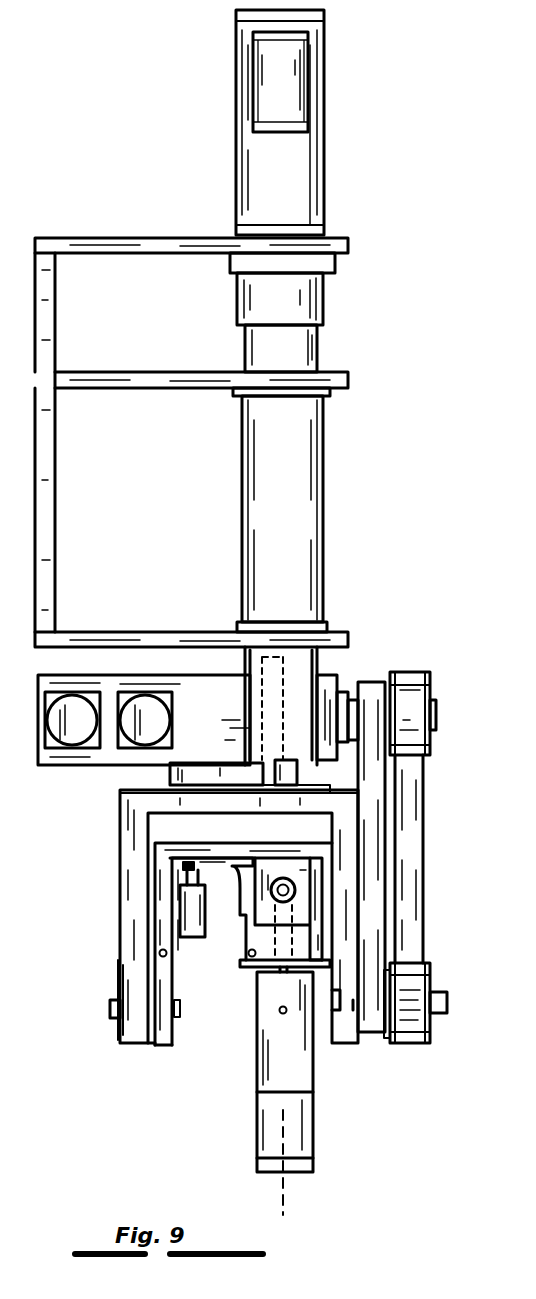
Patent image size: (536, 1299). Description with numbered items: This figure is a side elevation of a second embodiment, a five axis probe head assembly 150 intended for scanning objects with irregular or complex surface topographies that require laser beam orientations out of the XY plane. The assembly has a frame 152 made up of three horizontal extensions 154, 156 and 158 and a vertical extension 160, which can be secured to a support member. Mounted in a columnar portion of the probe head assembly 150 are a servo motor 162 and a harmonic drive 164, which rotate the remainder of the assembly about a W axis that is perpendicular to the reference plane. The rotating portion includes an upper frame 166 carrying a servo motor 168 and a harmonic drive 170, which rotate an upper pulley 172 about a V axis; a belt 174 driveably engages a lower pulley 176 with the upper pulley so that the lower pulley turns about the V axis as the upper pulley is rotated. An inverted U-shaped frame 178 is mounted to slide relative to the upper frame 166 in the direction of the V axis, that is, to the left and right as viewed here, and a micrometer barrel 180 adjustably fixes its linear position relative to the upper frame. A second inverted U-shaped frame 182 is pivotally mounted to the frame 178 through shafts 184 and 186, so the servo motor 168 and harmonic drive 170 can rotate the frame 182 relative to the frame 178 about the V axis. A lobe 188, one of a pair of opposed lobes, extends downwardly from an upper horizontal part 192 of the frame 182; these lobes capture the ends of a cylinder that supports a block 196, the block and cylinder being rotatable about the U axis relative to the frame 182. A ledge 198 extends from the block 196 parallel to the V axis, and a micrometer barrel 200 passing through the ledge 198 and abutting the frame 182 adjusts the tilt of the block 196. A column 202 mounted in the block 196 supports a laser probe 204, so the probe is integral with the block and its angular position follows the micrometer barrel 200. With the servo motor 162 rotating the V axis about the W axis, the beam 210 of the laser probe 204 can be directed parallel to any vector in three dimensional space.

The probe head assembly 150 is at (190, 205).
The frame 152 is at (57, 516).
The horizontal extension 154 is at (97, 262).
The horizontal extension 156 is at (97, 397).
The horizontal extension 158 is at (100, 632).
The vertical extension 160 is at (57, 335).
The servo motor 162 is at (288, 92).
The harmonic drive 164 is at (313, 298).
The upper frame 166 is at (270, 707).
The servo motor 168 is at (195, 707).
The harmonic drive 170 is at (300, 690).
The upper pulley 172 is at (420, 690).
The belt 174 is at (412, 840).
The lower pulley 176 is at (432, 1030).
The inverted U-shaped frame 178 is at (128, 840).
The micrometer barrel 180 is at (170, 771).
The second inverted U-shaped frame 182 is at (163, 968).
The shaft 184 is at (118, 1010).
The shaft 186 is at (358, 1032).
The lobe 188 is at (300, 900).
The upper horizontal part 192 is at (240, 853).
The block 196 is at (247, 922).
The ledge 198 is at (185, 873).
The micrometer barrel 200 is at (190, 899).
The column 202 is at (273, 973).
The laser probe 204 is at (292, 1075).
The beam 210 is at (283, 1192).